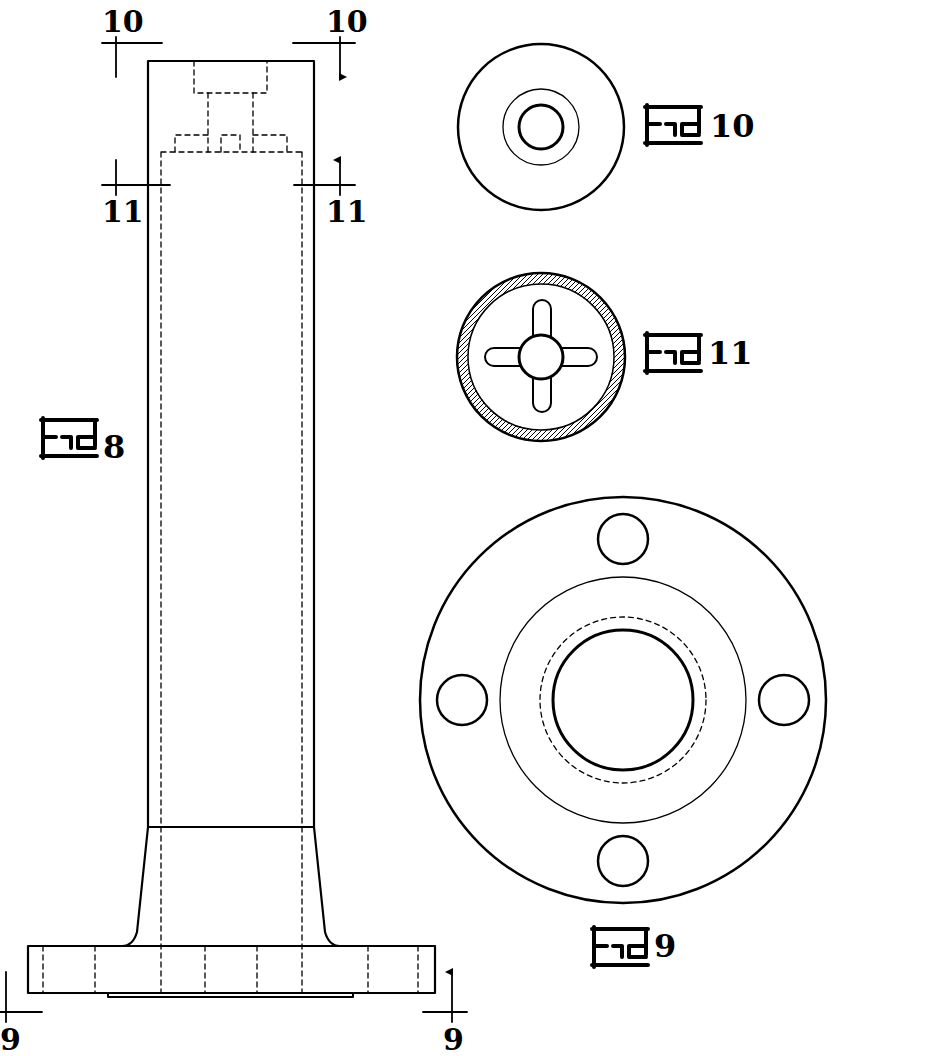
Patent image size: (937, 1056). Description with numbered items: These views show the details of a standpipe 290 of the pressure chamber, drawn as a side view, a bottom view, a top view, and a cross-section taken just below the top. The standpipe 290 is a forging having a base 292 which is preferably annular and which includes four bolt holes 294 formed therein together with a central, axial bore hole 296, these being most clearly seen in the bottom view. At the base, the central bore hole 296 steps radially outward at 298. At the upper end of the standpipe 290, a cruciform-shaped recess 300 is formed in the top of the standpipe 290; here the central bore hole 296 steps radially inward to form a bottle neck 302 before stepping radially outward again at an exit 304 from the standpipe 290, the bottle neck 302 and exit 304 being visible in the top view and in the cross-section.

In FIG. 8, the standpipe 290 is at (183, 285).
In FIG. 10, the standpipe 290 is at (497, 56).
In FIG. 11, the standpipe 290 is at (500, 284).
In FIG. 9, the standpipe 290 is at (560, 644).
In FIG. 8, the base 292 is at (100, 944).
In FIG. 9, the base 292 is at (462, 609).
In FIG. 8, the bolt holes 294 is at (75, 985).
In FIG. 9, the bolt holes 294 is at (646, 528).
In FIG. 8, the central, axial bore hole 296 is at (207, 740).
In FIG. 9, the central, axial bore hole 296 is at (639, 714).
In FIG. 8, the radially outward step 298 is at (250, 997).
In FIG. 9, the radially outward step 298 is at (570, 608).
In FIG. 8, the cruciform-shaped recess 300 is at (176, 138).
In FIG. 11, the cruciform-shaped recess 300 is at (492, 345).
In FIG. 8, the bottle neck 302 is at (207, 118).
In FIG. 10, the bottle neck 302 is at (545, 135).
In FIG. 11, the bottle neck 302 is at (545, 357).
In FIG. 8, the exit 304 is at (257, 91).
In FIG. 10, the exit 304 is at (521, 108).